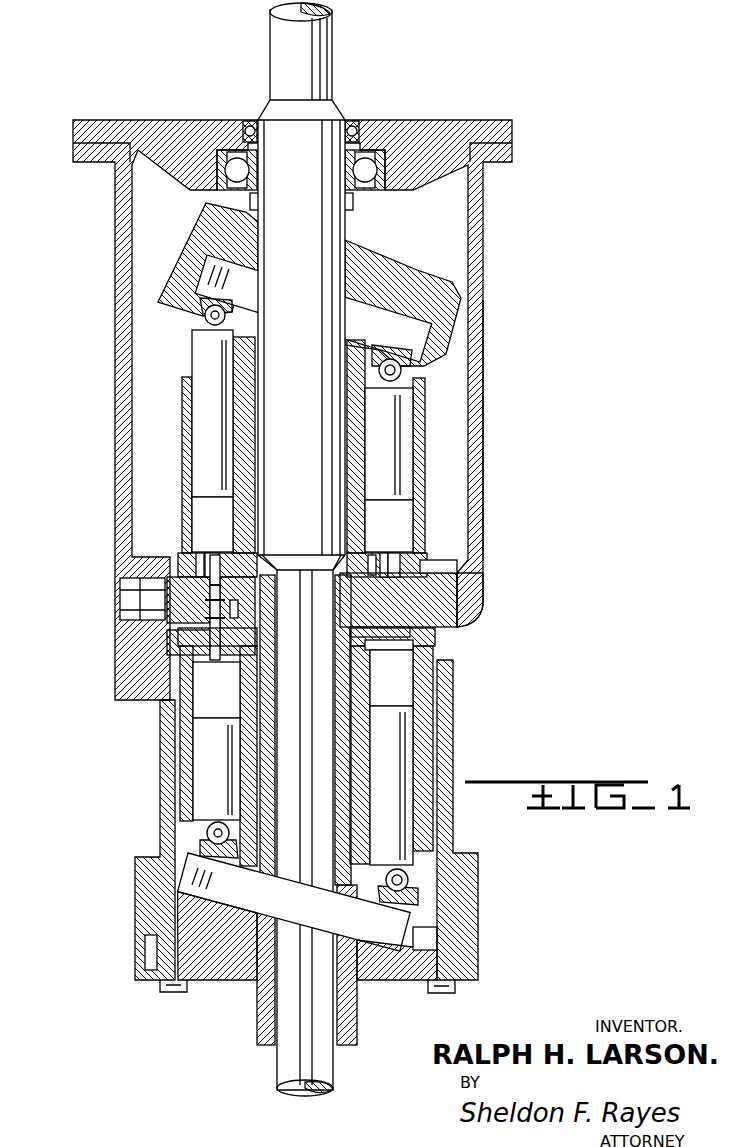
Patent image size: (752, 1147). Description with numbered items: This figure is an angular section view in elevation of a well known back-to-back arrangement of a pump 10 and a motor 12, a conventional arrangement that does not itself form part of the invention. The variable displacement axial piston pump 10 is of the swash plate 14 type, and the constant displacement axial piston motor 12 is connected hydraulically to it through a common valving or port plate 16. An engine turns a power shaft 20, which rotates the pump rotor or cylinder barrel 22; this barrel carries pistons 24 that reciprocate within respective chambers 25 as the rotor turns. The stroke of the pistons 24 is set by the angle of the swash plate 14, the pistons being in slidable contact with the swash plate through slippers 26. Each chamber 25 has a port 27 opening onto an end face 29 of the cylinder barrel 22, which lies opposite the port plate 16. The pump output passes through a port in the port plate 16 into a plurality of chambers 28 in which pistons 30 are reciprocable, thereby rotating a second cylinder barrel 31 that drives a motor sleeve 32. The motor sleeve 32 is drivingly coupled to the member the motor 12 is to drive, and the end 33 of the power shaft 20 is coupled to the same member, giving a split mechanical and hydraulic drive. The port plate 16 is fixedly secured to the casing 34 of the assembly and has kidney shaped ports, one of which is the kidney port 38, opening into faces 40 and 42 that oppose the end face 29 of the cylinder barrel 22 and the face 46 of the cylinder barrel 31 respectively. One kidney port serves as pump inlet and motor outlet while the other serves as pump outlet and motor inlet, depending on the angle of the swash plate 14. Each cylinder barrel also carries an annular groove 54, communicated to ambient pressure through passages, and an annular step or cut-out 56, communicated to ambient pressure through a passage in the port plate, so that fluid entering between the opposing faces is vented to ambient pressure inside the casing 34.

The pump 10 is at (440, 446).
The motor 12 is at (452, 730).
The swash plate 14 is at (385, 268).
The port plate 16 is at (440, 592).
The power shaft 20 is at (282, 42).
The cylinder barrel 22 is at (428, 432).
The pistons 24 is at (200, 356).
The chambers 25 is at (213, 523).
The slippers 26 is at (430, 365).
The port 27 is at (205, 560).
The chambers 28 is at (198, 660).
The end face 29 is at (320, 552).
The pistons 30 is at (205, 727).
The cylinder barrel 31 is at (430, 698).
The motor sleeve 32 is at (262, 1020).
The end 33 is at (303, 1065).
The casing 34 is at (486, 460).
The kidney shaped port 38 is at (205, 622).
The face 40 is at (460, 566).
The face 42 is at (432, 650).
The face 46 is at (405, 620).
The annular groove 54 is at (312, 614).
The annular step 56 is at (372, 556).